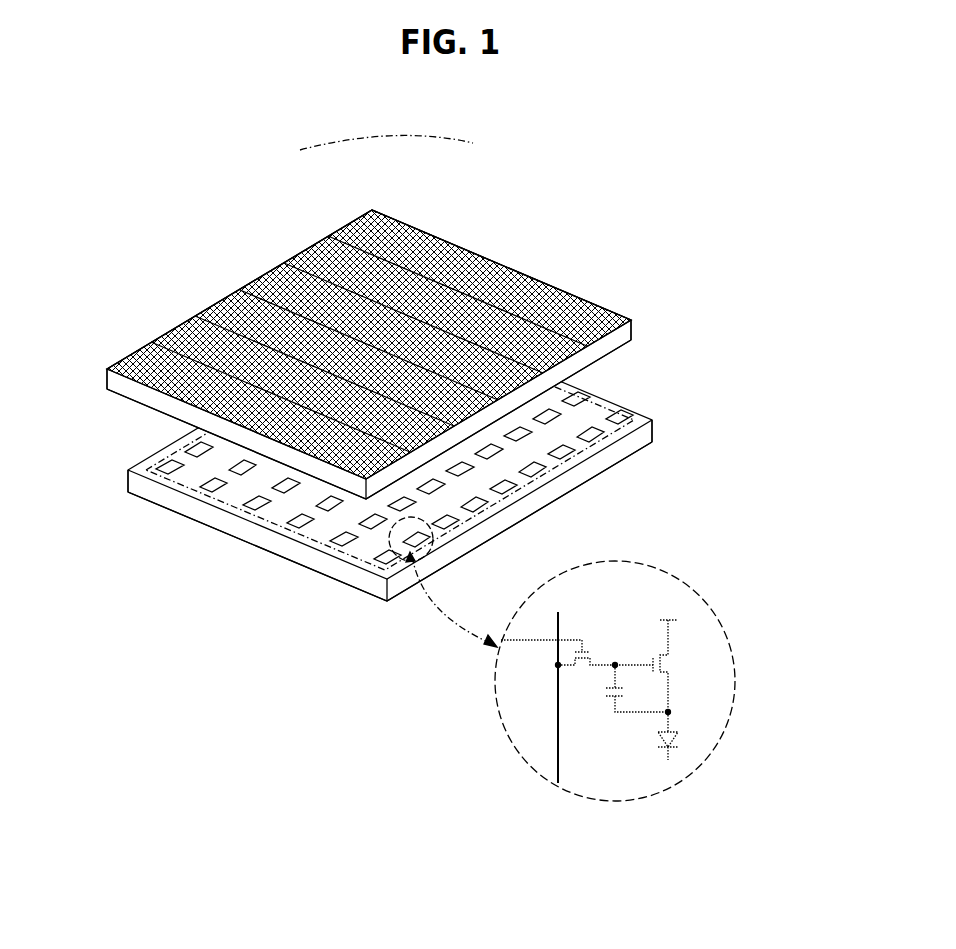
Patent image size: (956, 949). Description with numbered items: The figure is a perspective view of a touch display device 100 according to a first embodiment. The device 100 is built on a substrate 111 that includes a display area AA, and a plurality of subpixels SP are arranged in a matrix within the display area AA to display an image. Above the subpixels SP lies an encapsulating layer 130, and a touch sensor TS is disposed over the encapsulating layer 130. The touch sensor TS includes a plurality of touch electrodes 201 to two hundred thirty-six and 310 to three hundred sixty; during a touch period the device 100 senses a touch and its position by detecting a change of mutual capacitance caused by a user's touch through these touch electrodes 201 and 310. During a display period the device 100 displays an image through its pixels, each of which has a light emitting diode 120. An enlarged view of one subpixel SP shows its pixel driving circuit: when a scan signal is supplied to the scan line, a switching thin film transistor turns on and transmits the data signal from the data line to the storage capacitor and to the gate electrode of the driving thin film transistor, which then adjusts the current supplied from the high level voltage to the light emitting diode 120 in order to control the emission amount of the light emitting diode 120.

The touch display device 100 is at (541, 169).
The substrate 111 is at (654, 437).
The encapsulating layer 130 is at (632, 330).
The light emitting diode 120 is at (676, 734).
The touch electrodes 201 is at (365, 212).
The touch electrodes 310 is at (387, 215).
The touch sensor TS is at (386, 130).
The subpixels SP is at (626, 420).
The display area AA is at (264, 520).